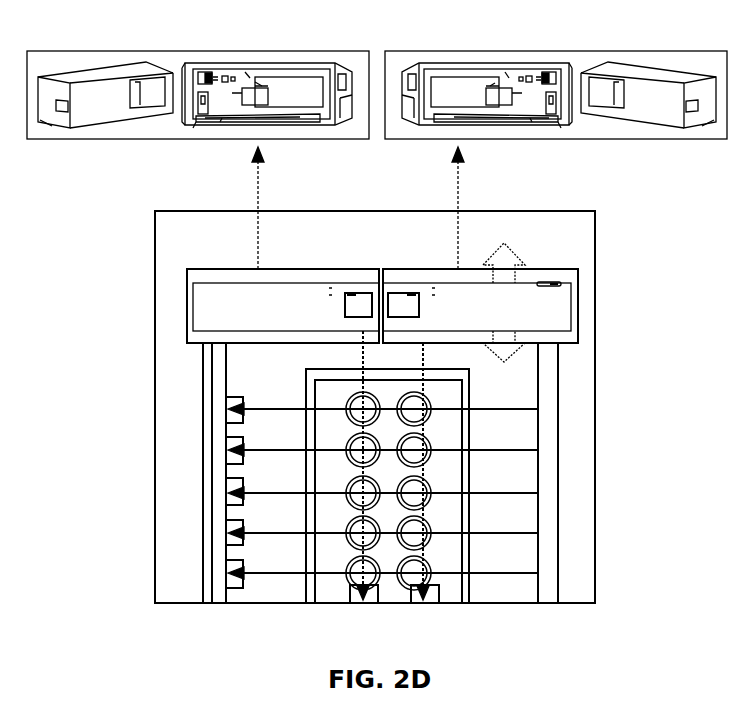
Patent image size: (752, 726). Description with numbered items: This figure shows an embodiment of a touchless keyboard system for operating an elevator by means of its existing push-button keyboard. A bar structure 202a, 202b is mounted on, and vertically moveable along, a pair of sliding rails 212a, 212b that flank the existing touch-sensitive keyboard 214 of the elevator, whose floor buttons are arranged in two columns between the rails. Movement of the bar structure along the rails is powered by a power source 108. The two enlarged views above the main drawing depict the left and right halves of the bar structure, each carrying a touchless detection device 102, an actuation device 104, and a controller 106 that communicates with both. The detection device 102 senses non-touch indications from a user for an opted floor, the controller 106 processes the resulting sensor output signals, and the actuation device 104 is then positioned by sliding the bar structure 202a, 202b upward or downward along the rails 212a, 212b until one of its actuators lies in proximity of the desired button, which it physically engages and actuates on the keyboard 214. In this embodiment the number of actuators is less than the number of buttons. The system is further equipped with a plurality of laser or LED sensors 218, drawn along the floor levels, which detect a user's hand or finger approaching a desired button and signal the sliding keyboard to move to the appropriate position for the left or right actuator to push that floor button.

The touchless detection device 102 is at (250, 77).
The actuation device 104 is at (255, 82).
The controller 106 is at (193, 128).
The power source 108 is at (220, 122).
The bar structure 202a is at (197, 307).
The bar structure 202b is at (560, 307).
The sliding rail 212a is at (207, 445).
The sliding rail 212b is at (560, 437).
The existing touch-sensitive keyboard 214 is at (450, 525).
The laser or LED sensors 218 is at (503, 576).